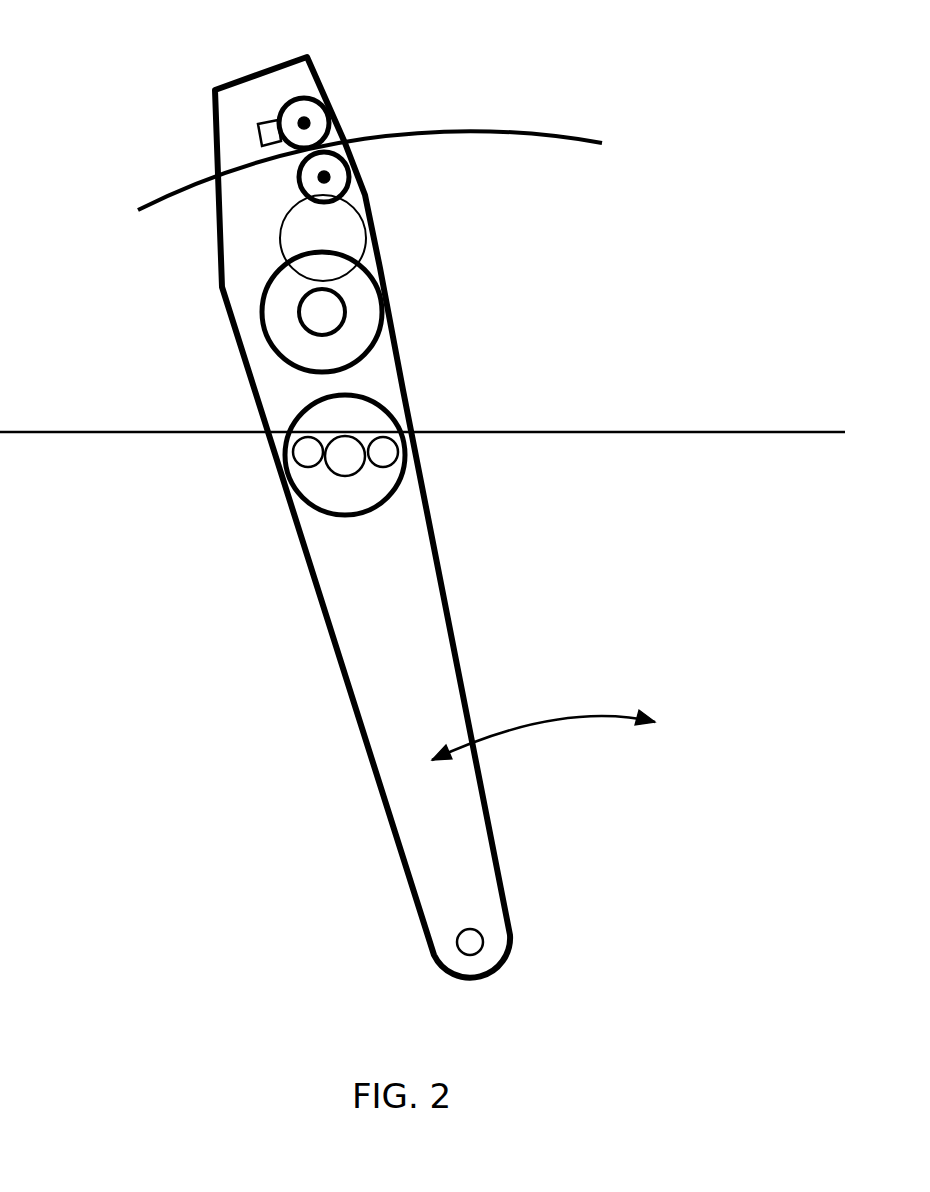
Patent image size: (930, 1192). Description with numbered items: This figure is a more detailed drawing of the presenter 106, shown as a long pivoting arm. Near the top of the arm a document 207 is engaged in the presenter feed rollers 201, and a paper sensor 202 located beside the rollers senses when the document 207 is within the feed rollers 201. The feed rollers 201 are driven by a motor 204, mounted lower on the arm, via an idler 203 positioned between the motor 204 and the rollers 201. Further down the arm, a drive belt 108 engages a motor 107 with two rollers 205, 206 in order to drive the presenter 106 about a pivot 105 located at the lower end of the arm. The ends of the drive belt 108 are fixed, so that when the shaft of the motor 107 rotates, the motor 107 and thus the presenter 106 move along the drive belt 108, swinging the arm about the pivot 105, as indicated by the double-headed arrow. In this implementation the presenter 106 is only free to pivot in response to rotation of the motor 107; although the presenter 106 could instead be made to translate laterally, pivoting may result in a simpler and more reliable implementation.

The pivot 105 is at (456, 940).
The presenter 106 is at (453, 637).
The motor 107 is at (317, 510).
The drive belt 108 is at (495, 432).
The presenter feed rollers 201 is at (325, 175).
The paper sensor 202 is at (258, 130).
The idler 203 is at (327, 230).
The motor 204 is at (288, 302).
The roller 205 is at (297, 458).
The roller 206 is at (373, 458).
The document 207 is at (534, 131).